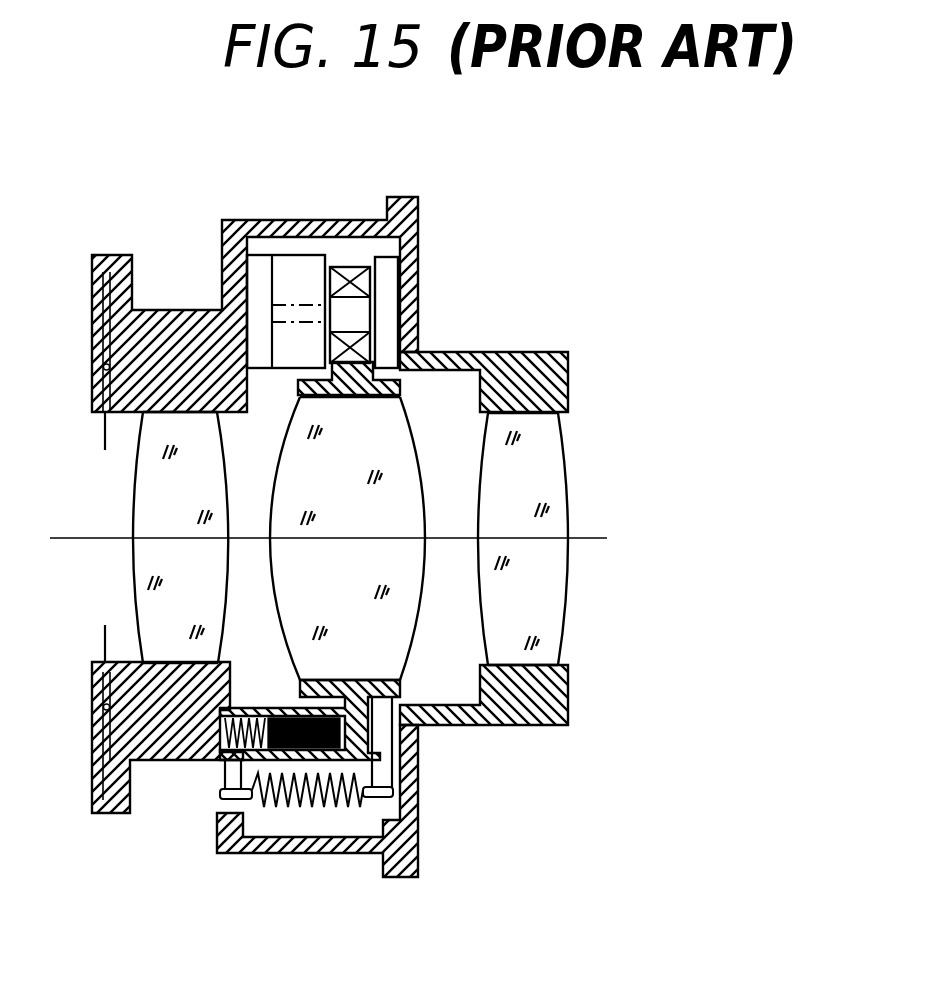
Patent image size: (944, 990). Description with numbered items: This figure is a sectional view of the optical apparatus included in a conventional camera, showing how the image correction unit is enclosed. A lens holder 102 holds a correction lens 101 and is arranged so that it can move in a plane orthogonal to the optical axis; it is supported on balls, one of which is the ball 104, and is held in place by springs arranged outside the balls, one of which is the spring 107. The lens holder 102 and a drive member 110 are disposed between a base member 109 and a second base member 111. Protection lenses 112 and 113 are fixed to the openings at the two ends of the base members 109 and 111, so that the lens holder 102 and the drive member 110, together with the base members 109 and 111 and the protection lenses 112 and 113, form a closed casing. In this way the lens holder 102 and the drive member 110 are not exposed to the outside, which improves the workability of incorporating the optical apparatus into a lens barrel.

The correction lens 101 is at (387, 447).
The lens holder 102 is at (400, 387).
The ball 104 is at (353, 757).
The spring 107 is at (253, 800).
The base member 109 is at (233, 230).
The drive member 110 is at (319, 253).
The base member 111 is at (562, 352).
The protection lens 112 is at (555, 600).
The protection lens 113 is at (155, 487).